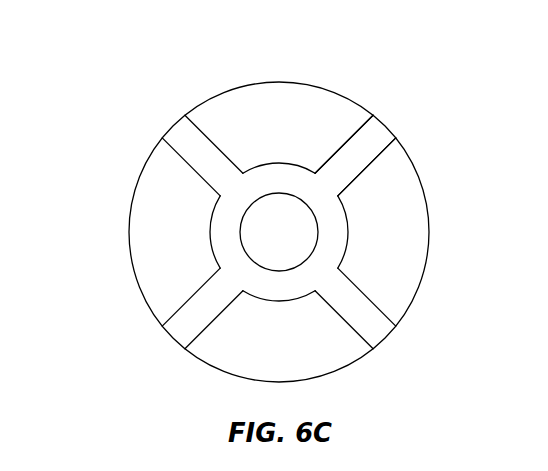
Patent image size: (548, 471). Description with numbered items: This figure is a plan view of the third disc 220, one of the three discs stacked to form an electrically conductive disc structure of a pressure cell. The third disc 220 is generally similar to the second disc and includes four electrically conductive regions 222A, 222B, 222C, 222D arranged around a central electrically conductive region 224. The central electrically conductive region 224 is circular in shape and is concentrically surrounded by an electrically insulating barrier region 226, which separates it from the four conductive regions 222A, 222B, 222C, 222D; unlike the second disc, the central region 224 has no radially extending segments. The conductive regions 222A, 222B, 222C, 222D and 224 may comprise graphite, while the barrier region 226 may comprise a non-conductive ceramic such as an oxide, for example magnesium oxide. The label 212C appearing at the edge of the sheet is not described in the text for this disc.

The third disc 220 is at (172, 78).
The catheter segment 212C is at (524, 0).
The electrically conductive region 222A is at (305, 110).
The electrically conductive region 222B is at (397, 230).
The electrically conductive region 222C is at (233, 352).
The electrically conductive region 222D is at (160, 225).
The central electrically conductive region 224 is at (299, 242).
The electrically insulating barrier region 226 is at (362, 147).